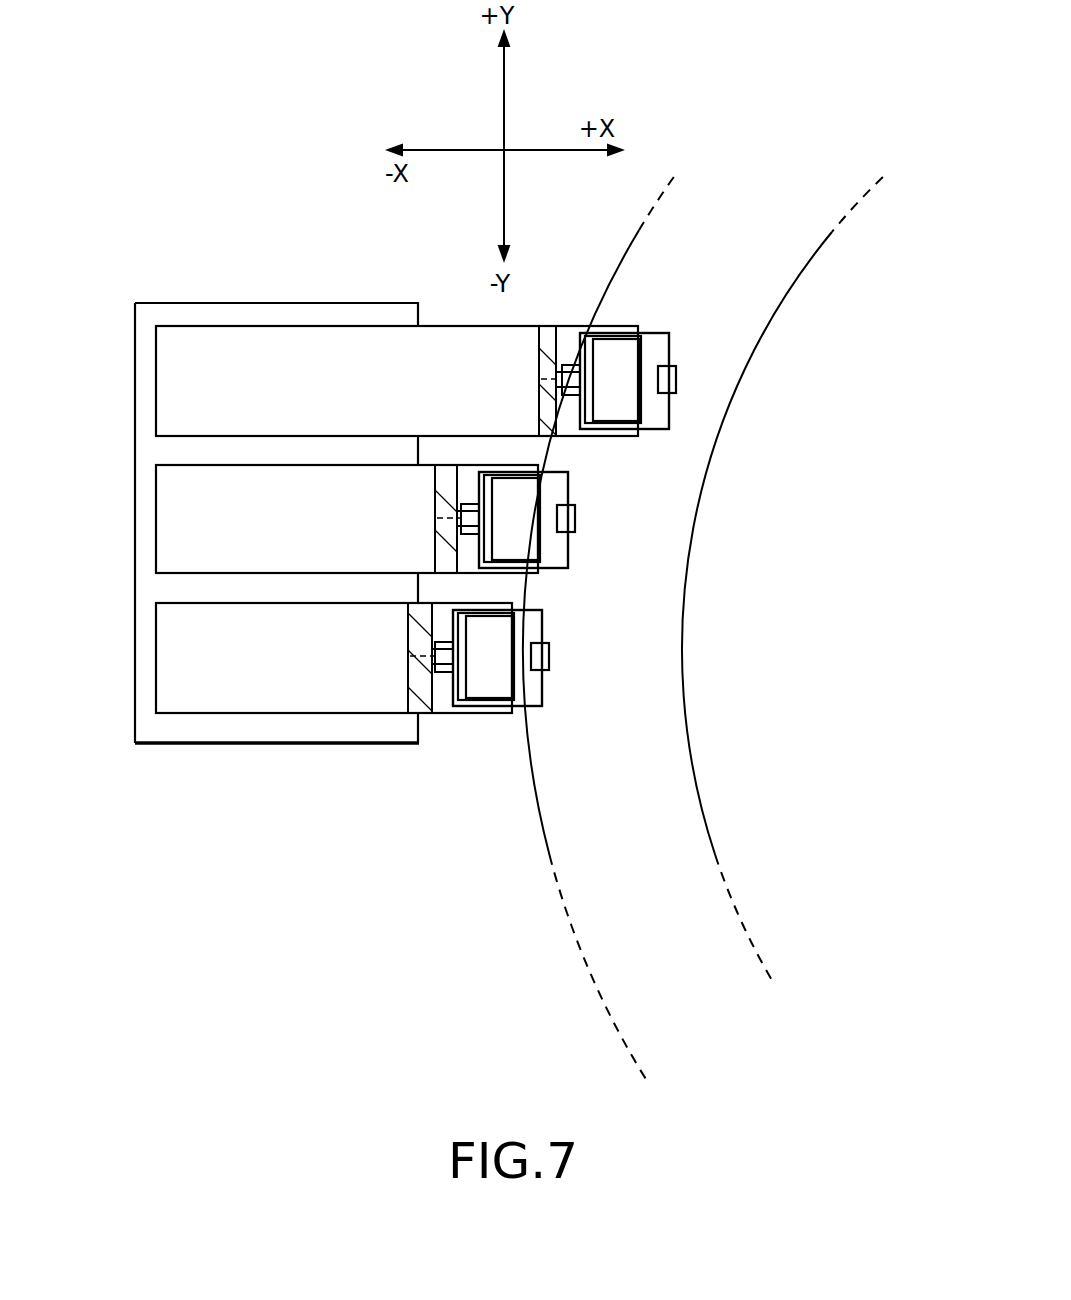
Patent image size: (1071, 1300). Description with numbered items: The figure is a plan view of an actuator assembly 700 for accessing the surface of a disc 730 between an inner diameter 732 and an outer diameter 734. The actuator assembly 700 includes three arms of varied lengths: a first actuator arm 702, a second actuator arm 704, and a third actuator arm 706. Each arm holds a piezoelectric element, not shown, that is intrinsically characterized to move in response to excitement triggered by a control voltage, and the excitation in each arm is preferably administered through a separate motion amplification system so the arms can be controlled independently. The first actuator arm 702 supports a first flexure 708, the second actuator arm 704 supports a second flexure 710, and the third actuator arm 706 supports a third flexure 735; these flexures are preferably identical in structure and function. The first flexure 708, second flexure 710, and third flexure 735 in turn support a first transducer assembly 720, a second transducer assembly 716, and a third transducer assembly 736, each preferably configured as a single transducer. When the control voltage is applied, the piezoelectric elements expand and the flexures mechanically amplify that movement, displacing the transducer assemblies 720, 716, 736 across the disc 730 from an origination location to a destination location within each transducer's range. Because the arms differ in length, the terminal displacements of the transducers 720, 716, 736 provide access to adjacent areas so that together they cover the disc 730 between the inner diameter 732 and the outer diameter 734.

The actuator assembly 700 is at (264, 765).
The first actuator arm 702 is at (186, 703).
The second actuator arm 704 is at (163, 505).
The third actuator arm 706 is at (265, 335).
The first flexure 708 is at (543, 705).
The second flexure 710 is at (570, 566).
The second transducer assembly 716 is at (575, 517).
The first transducer assembly 720 is at (549, 655).
The disc 730 is at (505, 773).
The inner diameter 732 is at (540, 818).
The outer diameter 734 is at (703, 815).
The third flexure 735 is at (668, 330).
The third transducer assembly 736 is at (668, 380).